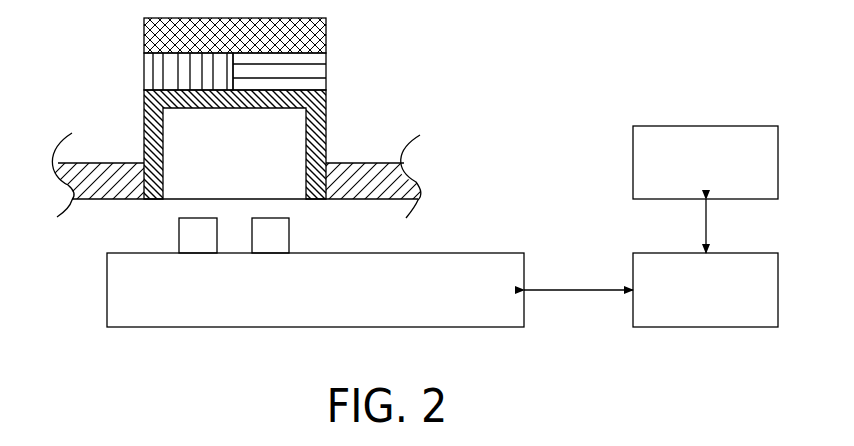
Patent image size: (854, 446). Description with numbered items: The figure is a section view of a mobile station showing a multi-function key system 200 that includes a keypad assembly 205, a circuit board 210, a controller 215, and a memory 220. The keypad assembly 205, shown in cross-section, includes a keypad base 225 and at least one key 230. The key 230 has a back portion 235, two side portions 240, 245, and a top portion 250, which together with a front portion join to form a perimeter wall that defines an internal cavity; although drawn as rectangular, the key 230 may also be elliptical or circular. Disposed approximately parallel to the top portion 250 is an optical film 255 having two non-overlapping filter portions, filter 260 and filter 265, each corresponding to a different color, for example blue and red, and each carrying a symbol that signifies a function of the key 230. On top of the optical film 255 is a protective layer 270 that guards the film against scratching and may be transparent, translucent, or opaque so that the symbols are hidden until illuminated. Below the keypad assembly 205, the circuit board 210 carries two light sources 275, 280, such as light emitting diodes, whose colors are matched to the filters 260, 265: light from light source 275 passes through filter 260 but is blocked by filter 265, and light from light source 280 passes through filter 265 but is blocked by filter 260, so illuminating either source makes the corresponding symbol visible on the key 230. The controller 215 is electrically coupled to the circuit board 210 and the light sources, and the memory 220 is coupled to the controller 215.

The multi-function key system 200 is at (668, 44).
The keypad assembly 205 is at (458, 112).
The circuit board 210 is at (315, 290).
The controller 215 is at (705, 290).
The memory 220 is at (705, 162).
The keypad base 225 is at (100, 202).
The key 230 is at (144, 145).
The back portion 235 is at (278, 170).
The side portion 240 is at (153, 122).
The side portion 245 is at (315, 125).
The top portion 250 is at (252, 100).
The optical film 255 is at (143, 67).
The filter 260 is at (163, 80).
The filter 265 is at (278, 73).
The protective layer 270 is at (326, 33).
The light source 275 is at (179, 233).
The light source 280 is at (289, 233).